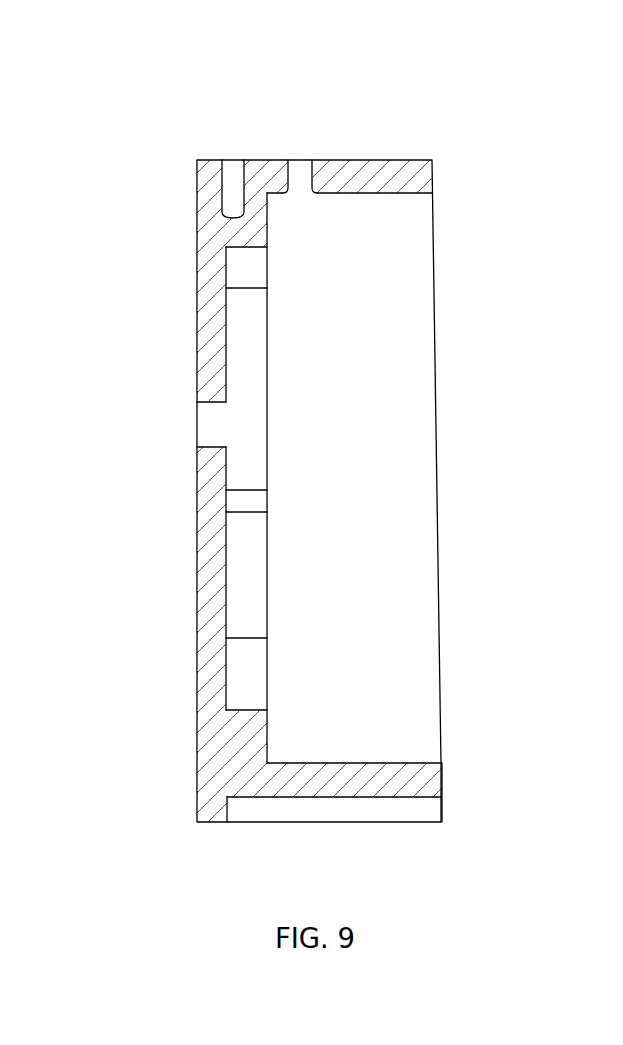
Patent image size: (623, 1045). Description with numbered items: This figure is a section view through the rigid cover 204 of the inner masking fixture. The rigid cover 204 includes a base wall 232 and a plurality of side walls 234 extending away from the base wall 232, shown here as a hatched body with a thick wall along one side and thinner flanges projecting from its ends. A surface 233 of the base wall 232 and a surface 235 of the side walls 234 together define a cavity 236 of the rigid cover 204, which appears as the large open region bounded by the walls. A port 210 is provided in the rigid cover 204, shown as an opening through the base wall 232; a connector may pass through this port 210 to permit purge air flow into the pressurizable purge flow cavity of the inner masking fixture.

The rigid cover 204 is at (206, 144).
The port 210 is at (215, 428).
The base wall 232 is at (217, 313).
The surface 233 is at (227, 357).
The side walls 234 is at (363, 180).
The surface 235 is at (340, 195).
The cavity 236 is at (352, 582).